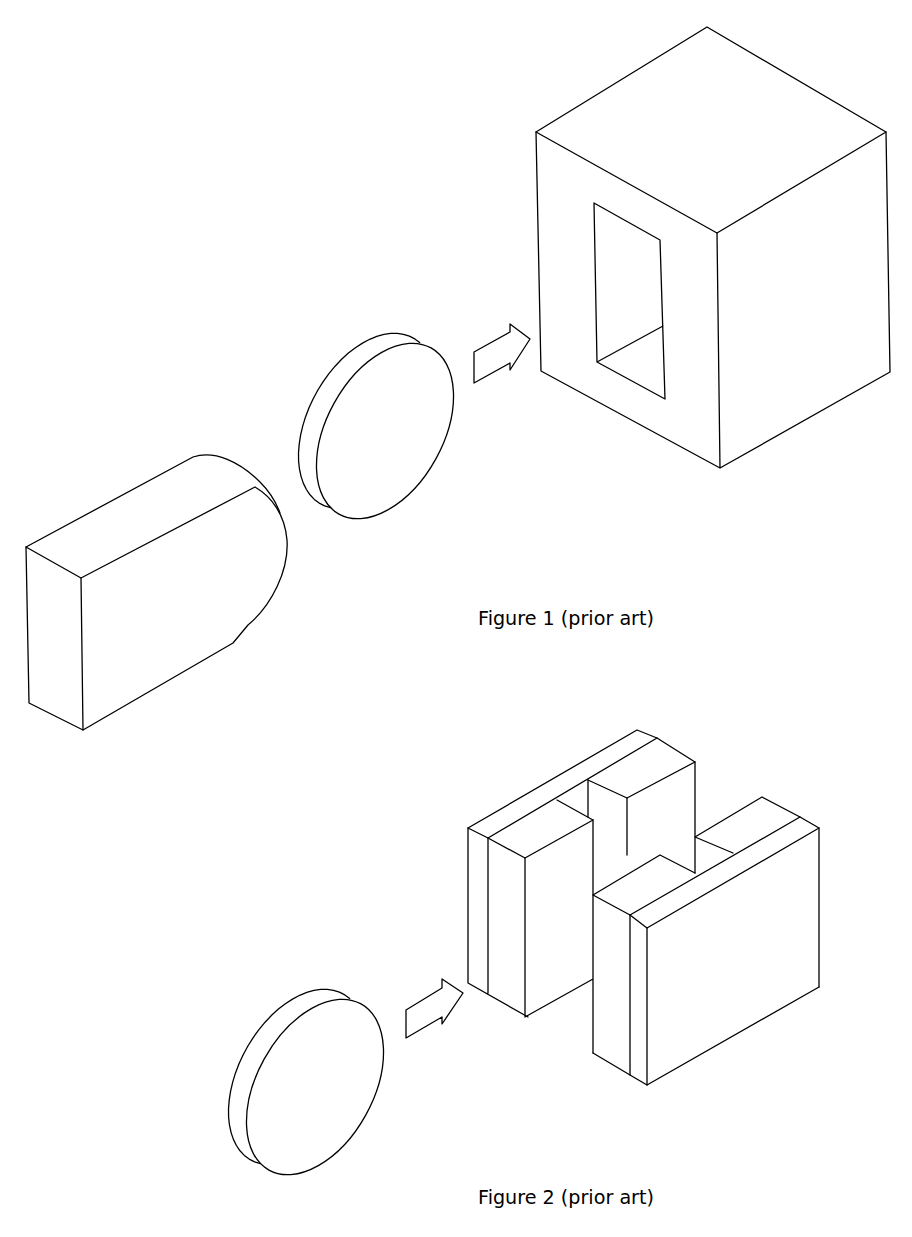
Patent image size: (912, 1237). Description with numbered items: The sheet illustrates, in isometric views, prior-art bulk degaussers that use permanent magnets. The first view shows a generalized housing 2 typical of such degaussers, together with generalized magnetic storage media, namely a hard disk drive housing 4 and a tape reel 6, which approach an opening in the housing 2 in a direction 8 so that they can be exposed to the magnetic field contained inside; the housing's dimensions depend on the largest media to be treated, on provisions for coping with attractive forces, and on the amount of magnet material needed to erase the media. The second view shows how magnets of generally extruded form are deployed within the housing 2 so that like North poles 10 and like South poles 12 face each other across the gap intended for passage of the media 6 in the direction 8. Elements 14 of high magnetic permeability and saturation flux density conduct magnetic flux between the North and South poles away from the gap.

In FIG. 1, the housing 2 is at (787, 403).
In FIG. 1, the hard disk drive housing 4 is at (136, 493).
In FIG. 1, the tape reel 6 is at (343, 377).
In FIG. 2, the tape reel 6 is at (273, 1032).
In FIG. 1, the direction 8 is at (519, 350).
In FIG. 2, the direction 8 is at (450, 1010).
In FIG. 2, the North poles 10 is at (552, 990).
In FIG. 2, the South poles 12 is at (728, 807).
In FIG. 2, the elements of high magnetic permeability 14 is at (690, 1030).